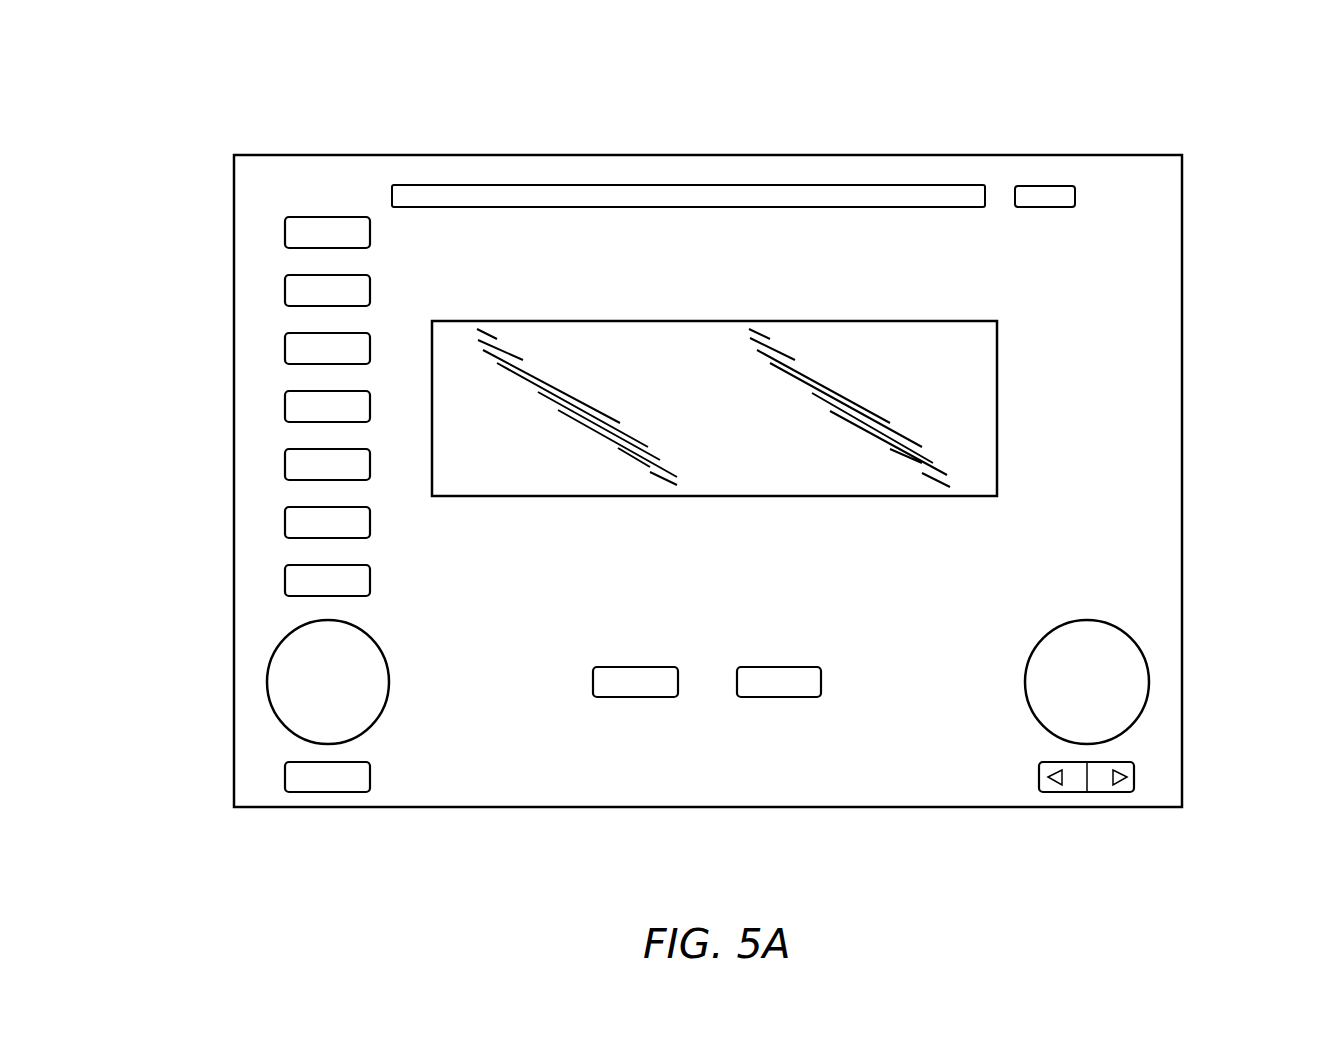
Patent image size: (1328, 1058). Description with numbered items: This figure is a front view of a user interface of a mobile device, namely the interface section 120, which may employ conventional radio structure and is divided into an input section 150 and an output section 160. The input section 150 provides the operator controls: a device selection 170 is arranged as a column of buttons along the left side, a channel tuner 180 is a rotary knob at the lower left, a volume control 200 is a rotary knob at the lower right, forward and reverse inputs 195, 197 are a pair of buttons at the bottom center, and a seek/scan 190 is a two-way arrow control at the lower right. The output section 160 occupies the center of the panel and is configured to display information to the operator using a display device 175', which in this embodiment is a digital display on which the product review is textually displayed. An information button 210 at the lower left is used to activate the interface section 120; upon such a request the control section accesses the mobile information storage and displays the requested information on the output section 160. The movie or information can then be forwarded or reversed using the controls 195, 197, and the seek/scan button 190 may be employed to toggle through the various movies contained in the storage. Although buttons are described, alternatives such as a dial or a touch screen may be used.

The interface section 120 is at (1187, 101).
The input section 150 is at (277, 214).
The device selection 170 is at (300, 348).
The output section 160 is at (476, 452).
The display device 175' is at (871, 347).
The channel tuner 180 is at (300, 682).
The volume control 200 is at (1115, 682).
The information button 210 is at (325, 782).
The forward input 195 is at (630, 687).
The reverse input 197 is at (780, 687).
The seek/scan 190 is at (1097, 782).